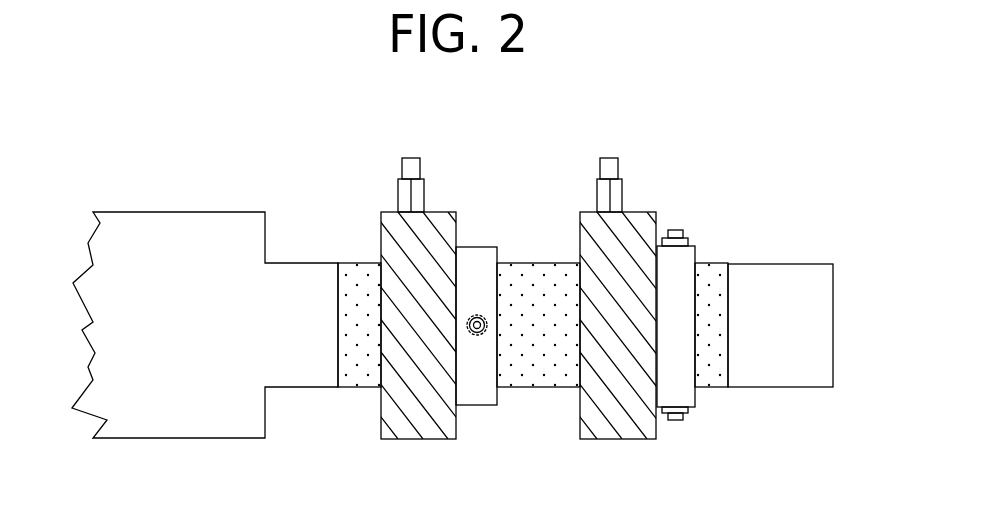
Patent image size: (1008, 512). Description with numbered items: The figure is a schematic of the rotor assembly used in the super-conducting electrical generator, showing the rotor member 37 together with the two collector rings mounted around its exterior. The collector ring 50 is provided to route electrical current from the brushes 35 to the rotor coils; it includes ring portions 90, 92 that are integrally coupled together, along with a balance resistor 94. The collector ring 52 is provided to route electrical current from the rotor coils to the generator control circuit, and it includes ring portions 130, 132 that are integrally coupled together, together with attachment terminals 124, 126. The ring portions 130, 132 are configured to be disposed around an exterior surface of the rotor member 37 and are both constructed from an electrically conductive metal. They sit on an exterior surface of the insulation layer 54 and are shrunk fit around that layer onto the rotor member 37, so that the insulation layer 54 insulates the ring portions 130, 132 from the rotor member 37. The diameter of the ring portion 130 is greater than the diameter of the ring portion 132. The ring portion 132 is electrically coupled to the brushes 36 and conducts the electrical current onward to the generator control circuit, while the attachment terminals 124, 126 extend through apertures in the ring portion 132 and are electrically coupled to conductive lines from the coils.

The brushes 35 is at (399, 192).
The brushes 36 is at (597, 192).
The rotor member 37 is at (840, 260).
The collector ring 50 is at (423, 302).
The collector ring 52 is at (622, 302).
The insulation layer 54 is at (715, 262).
The ring portion 90 is at (415, 439).
The ring portion 92 is at (475, 405).
The balance resistor 94 is at (487, 326).
The attachment terminal 124 is at (686, 231).
The attachment terminal 126 is at (673, 421).
The ring portion 130 is at (615, 439).
The ring portion 132 is at (694, 408).